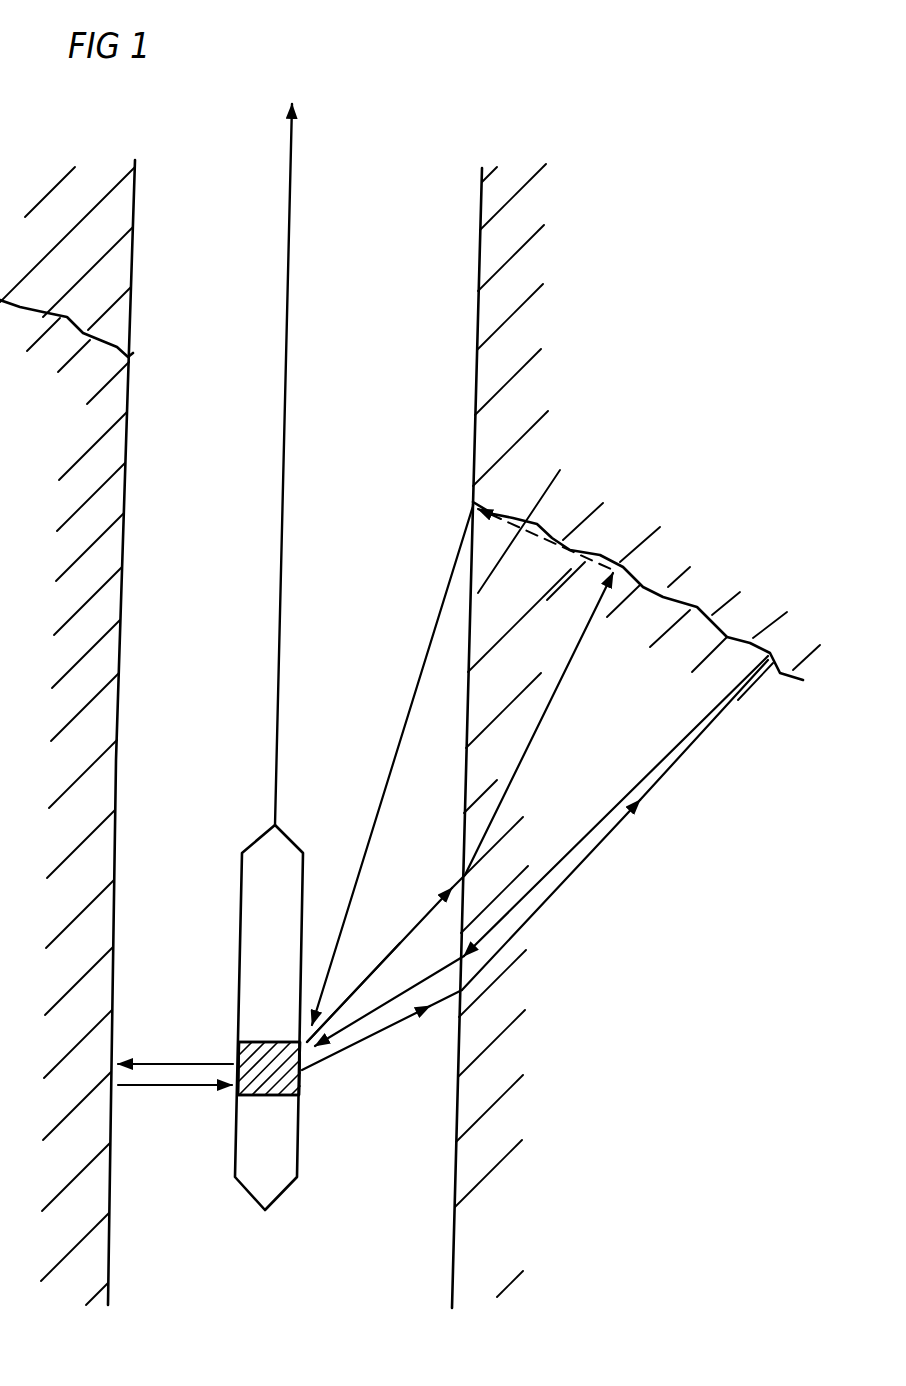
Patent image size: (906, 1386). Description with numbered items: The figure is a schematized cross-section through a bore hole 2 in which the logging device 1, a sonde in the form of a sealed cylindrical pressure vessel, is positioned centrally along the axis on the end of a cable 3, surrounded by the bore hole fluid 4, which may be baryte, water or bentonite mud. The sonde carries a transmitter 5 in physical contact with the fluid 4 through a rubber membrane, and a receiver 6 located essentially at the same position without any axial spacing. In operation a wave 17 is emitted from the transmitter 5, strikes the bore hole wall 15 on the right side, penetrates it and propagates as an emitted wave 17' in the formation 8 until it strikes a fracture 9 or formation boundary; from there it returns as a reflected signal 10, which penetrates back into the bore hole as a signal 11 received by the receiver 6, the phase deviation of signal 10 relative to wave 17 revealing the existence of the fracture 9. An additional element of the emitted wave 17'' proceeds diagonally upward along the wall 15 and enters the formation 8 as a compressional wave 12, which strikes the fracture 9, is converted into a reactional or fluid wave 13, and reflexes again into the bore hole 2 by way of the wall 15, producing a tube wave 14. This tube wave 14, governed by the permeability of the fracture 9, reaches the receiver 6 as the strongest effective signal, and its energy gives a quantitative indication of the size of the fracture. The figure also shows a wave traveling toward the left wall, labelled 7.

The logging device 1 is at (267, 912).
The bore hole 2 is at (480, 243).
The cable 3 is at (296, 180).
The bore hole fluid 4 is at (198, 732).
The transmitter 5 is at (273, 1070).
The receiver 6 is at (269, 1068).
The reflected acoustic wave 7 is at (185, 1085).
The formation 8 is at (683, 638).
The fracture 9 is at (600, 550).
The reflected signal 10 is at (612, 820).
The signal 11 is at (380, 1010).
The compressional wave 12 is at (576, 653).
The reactional wave 13 is at (548, 535).
The tube wave 14 is at (400, 735).
The bore hole wall 15 is at (450, 1224).
The emitted wave 17 is at (290, 1067).
The emitted wave in formation 17' is at (615, 825).
The additional element of the emitted wave 17'' is at (353, 1044).